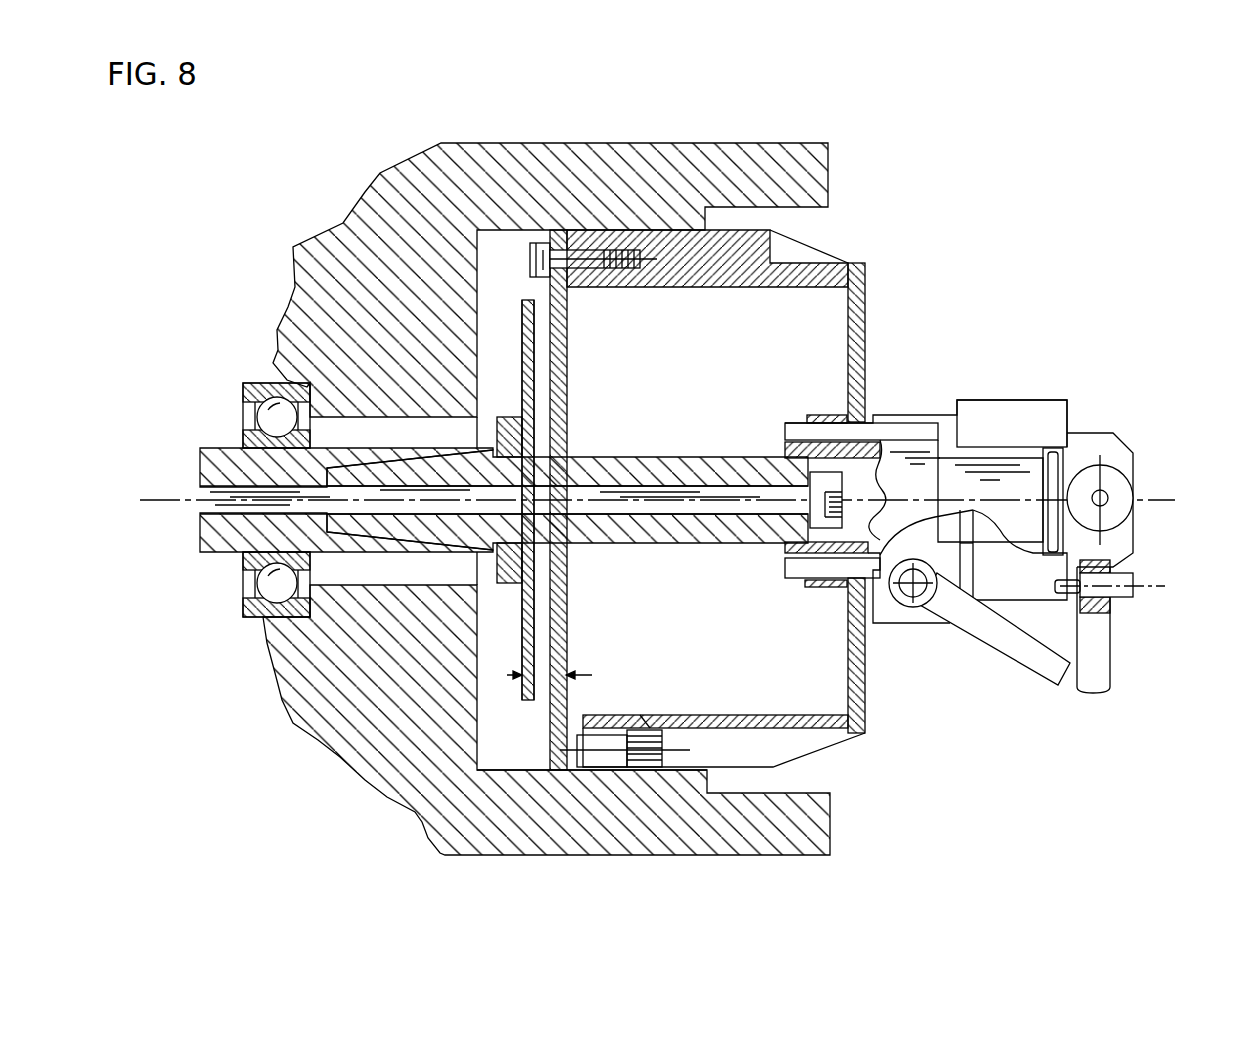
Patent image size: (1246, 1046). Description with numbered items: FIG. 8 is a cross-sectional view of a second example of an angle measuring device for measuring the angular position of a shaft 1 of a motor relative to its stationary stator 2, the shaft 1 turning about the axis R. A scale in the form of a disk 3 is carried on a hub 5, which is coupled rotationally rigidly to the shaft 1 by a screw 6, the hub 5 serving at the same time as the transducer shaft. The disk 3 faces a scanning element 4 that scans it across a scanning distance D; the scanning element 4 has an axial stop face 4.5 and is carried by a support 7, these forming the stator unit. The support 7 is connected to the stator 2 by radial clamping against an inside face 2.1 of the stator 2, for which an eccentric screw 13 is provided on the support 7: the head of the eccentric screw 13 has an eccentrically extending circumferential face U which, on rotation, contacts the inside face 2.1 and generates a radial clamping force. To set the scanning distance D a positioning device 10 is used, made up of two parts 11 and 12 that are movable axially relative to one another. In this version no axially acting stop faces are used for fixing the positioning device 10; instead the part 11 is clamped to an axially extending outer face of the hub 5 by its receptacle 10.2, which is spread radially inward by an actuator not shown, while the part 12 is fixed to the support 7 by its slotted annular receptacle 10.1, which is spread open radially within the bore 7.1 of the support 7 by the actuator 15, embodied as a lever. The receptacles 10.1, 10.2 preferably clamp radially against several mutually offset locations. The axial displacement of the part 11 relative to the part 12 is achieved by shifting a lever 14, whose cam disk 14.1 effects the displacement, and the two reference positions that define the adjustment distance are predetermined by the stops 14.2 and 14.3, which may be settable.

The shaft 1 is at (215, 447).
The stator 2 is at (290, 287).
The inside face 2.1 is at (500, 770).
The disk 3 is at (523, 357).
The scanning element 4 is at (557, 312).
The axial stop face 4.5 is at (524, 318).
The hub 5 is at (590, 455).
The screw 6 is at (653, 505).
The support 7 is at (775, 287).
The bore 7.1 is at (817, 417).
The positioning device 10 is at (970, 346).
The receptacle 10.1 is at (802, 572).
The receptacle 10.2 is at (785, 545).
The part 11 is at (923, 452).
The part 12 is at (1027, 413).
The eccentric screw 13 is at (667, 753).
The lever 14 is at (1100, 667).
The cam disk 14.1 is at (1100, 477).
The stop 14.2 is at (1056, 583).
The stop 14.3 is at (1140, 590).
The actuator 15 is at (990, 633).
The rotation axis R is at (158, 500).
The scanning distance D is at (553, 661).
The circumferential face U is at (643, 718).